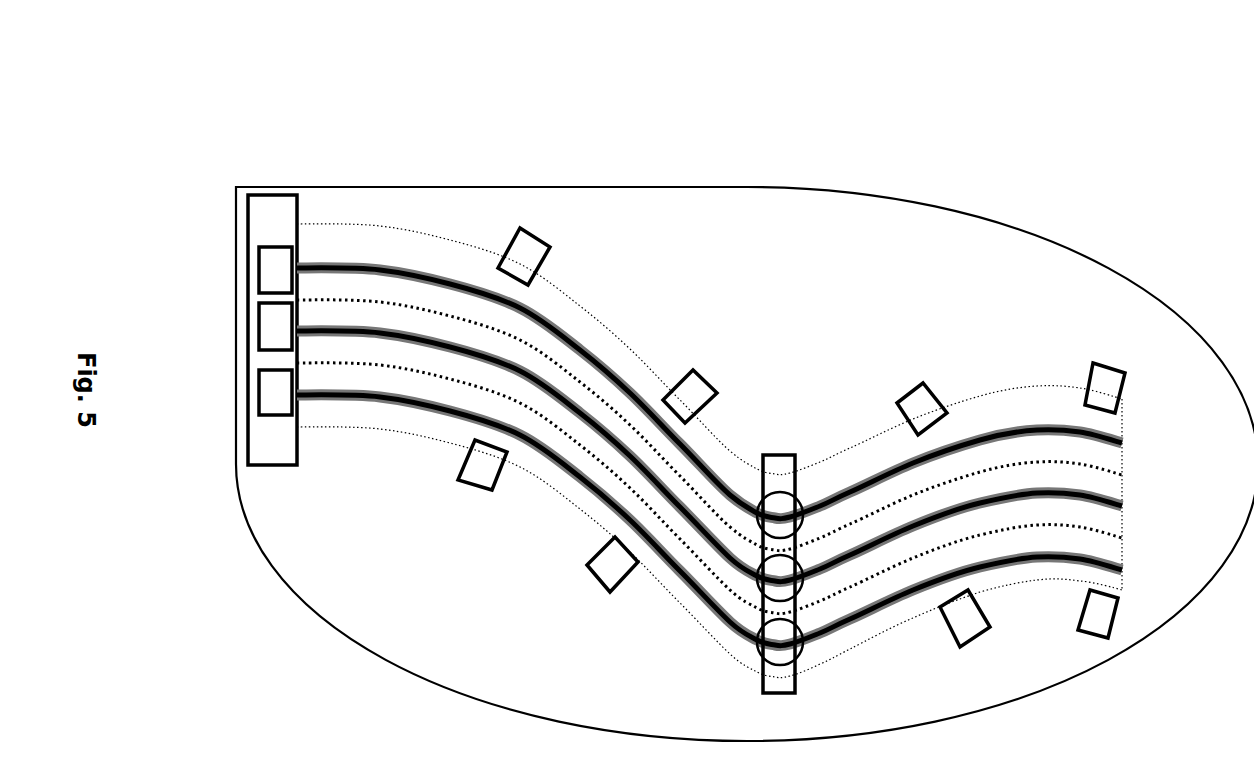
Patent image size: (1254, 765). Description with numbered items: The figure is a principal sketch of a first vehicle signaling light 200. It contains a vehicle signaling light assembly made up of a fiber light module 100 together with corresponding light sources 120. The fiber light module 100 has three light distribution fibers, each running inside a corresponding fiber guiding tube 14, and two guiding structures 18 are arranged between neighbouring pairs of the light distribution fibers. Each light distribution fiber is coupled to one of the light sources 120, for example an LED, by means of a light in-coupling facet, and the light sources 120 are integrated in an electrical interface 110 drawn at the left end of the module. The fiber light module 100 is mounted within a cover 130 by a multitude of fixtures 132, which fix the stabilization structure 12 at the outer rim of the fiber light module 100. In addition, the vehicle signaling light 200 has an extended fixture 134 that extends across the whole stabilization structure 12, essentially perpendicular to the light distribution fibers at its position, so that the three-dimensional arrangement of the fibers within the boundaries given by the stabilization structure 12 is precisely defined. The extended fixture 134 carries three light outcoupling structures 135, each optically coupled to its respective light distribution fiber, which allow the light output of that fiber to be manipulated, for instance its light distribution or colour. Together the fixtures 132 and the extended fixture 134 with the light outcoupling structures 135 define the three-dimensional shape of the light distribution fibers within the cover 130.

The vehicle signaling light 200 is at (412, 129).
The cover 130 is at (915, 228).
The electrical interface 110 is at (265, 465).
The light sources 120 is at (278, 258).
The fiber light module 100 is at (963, 400).
The stabilization structure 12 is at (548, 300).
The fiber guiding tubes 14 is at (590, 347).
The guiding structures 18 is at (397, 375).
The fixtures 132 is at (588, 572).
The extended fixture 134 is at (778, 456).
The light outcoupling structures 135 is at (762, 655).